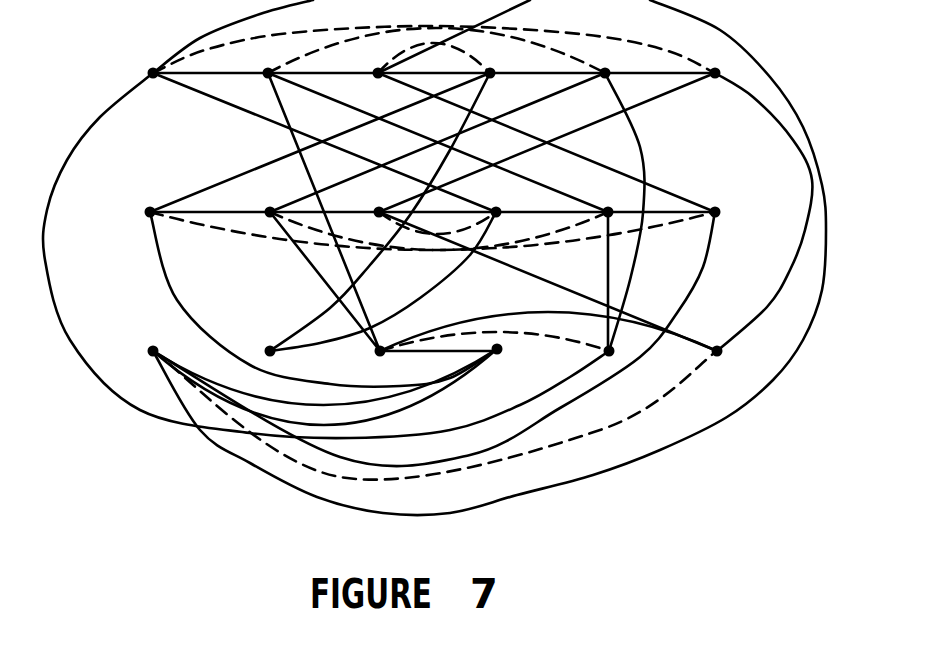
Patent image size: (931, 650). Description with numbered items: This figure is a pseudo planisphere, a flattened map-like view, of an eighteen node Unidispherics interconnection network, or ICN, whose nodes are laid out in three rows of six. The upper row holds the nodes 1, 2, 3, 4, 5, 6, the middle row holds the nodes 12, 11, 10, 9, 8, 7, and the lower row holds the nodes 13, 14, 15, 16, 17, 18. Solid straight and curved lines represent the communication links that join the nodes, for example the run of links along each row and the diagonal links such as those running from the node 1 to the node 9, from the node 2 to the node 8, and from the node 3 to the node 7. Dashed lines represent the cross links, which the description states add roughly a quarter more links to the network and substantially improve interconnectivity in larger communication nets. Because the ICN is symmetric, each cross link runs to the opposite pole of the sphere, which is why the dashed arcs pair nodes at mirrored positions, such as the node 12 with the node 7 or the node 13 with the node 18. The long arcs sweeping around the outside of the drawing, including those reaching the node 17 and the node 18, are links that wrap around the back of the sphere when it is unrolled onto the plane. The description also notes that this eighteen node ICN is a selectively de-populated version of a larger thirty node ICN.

The node 1 is at (153, 73).
The node 2 is at (268, 74).
The node 3 is at (378, 74).
The node 4 is at (490, 72).
The node 5 is at (605, 72).
The node 6 is at (715, 75).
The node 7 is at (716, 211).
The node 8 is at (613, 187).
The node 9 is at (496, 211).
The node 10 is at (379, 187).
The node 11 is at (270, 211).
The node 12 is at (150, 211).
The node 13 is at (153, 350).
The node 14 is at (270, 350).
The node 15 is at (380, 352).
The node 16 is at (498, 351).
The node 17 is at (610, 352).
The node 18 is at (718, 353).